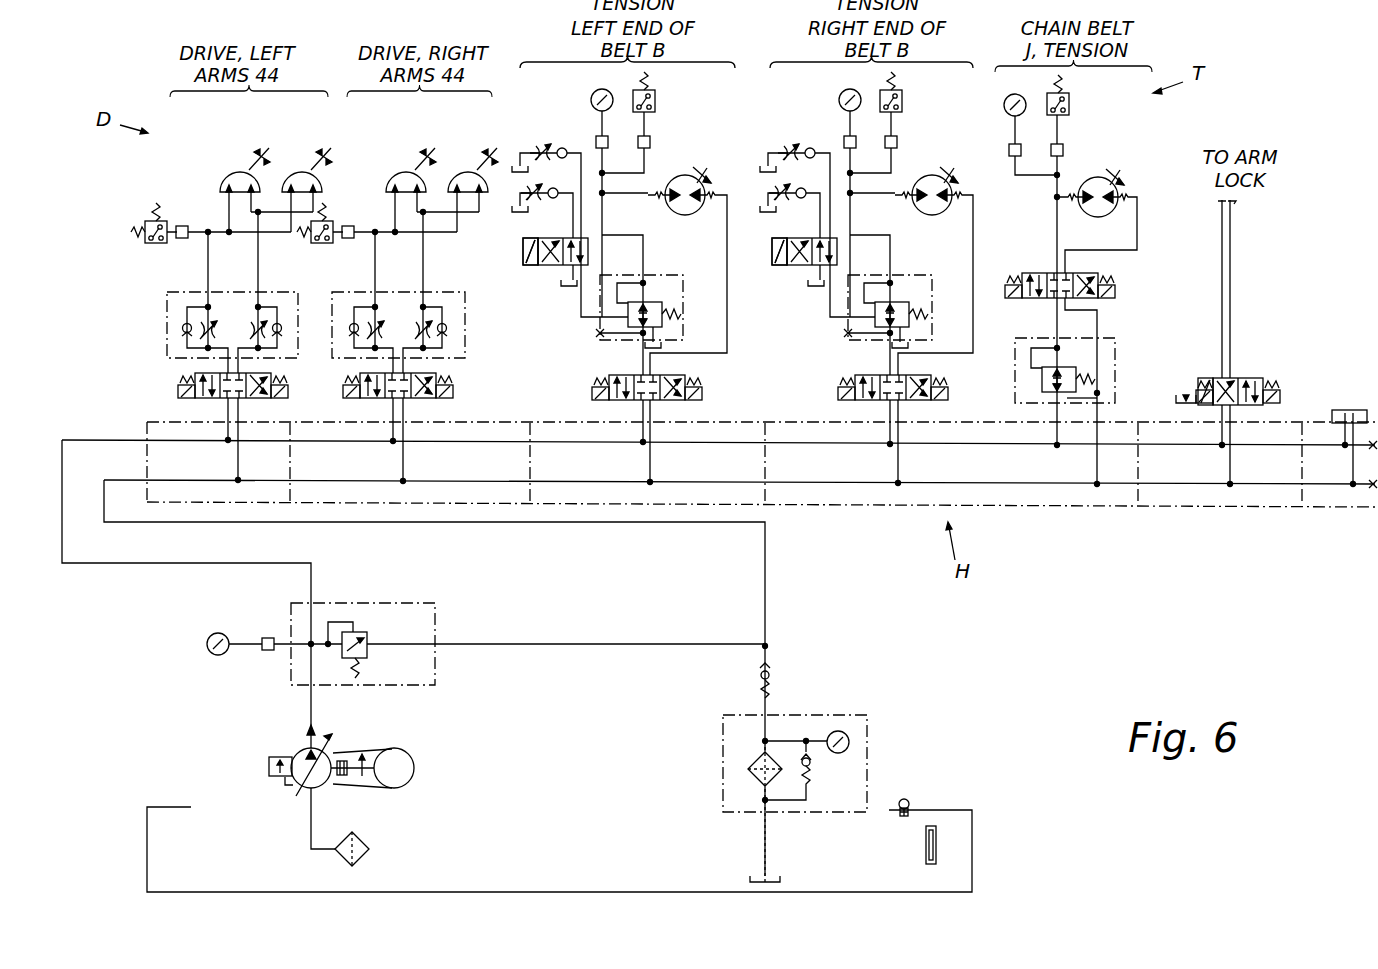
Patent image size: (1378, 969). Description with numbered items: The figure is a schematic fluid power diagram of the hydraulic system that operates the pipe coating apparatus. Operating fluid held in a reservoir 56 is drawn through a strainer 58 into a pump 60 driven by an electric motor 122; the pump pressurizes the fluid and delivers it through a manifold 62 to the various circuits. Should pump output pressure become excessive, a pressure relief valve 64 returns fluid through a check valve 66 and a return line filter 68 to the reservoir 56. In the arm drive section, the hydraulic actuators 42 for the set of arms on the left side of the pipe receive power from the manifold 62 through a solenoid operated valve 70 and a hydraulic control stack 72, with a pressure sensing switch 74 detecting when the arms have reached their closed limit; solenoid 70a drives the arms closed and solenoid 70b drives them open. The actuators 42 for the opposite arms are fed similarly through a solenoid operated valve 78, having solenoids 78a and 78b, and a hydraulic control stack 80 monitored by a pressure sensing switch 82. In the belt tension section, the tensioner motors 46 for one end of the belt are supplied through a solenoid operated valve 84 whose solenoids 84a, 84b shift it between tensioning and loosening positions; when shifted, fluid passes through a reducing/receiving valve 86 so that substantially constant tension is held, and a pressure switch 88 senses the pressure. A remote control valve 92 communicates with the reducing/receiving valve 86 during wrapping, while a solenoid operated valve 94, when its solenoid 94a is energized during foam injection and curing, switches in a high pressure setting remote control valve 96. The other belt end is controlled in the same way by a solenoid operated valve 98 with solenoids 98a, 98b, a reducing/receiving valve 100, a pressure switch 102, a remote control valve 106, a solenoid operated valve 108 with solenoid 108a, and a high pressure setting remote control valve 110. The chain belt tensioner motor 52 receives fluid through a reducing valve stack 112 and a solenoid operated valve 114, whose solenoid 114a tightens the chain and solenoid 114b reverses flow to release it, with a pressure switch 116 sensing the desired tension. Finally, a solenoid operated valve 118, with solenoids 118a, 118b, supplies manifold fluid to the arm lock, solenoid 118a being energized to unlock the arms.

The hydraulic actuator 42 is at (237, 169).
The hydraulic tensioner motor 46 is at (675, 175).
The actuator motor 52 is at (1088, 180).
The reservoir 56 is at (972, 826).
The strainer 58 is at (369, 849).
The motor-driven pump 60 is at (303, 752).
The manifold 62 is at (832, 508).
The pressure relief valve 64 is at (437, 632).
The check valve 66 is at (778, 680).
The return line filter 68 is at (868, 745).
The solenoid operated valve 70 is at (176, 389).
The solenoid 70a is at (178, 378).
The solenoid 70b is at (290, 378).
The hydraulic control stack 72 is at (166, 305).
The pressure sensing switch 74 is at (152, 220).
The solenoid operated valve 78 is at (456, 390).
The solenoid 78a is at (345, 380).
The solenoid 78b is at (455, 378).
The hydraulic control stack 80 is at (466, 330).
The pressure sensing switch 82 is at (335, 222).
The solenoid operated valve 84 is at (706, 396).
The solenoid 84a is at (600, 375).
The solenoid 84b is at (703, 380).
The reducing/receiving valve 86 is at (673, 273).
The pressure switch 88 is at (658, 100).
The remote control valve 92 is at (553, 148).
The solenoid operated valve 94 is at (525, 269).
The solenoid 94a is at (523, 250).
The high pressure setting remote control valve 96 is at (551, 200).
The solenoid operated valve 98 is at (836, 390).
The solenoid 98a is at (848, 375).
The solenoid 98b is at (948, 378).
The reducing/receiving valve 100 is at (914, 273).
The pressure switch 102 is at (905, 105).
The remote control valve 106 is at (800, 150).
The solenoid operated valve 108 is at (779, 271).
The solenoid 108a is at (772, 256).
The high pressure setting remote control valve 110 is at (798, 200).
The reducing valve stack 112 is at (1120, 354).
The solenoid operated valve 114 is at (1118, 289).
The solenoid 114a is at (1004, 270).
The solenoid 114b is at (1118, 272).
The pressure switch 116 is at (1071, 106).
The solenoid operated valve 118 is at (1243, 374).
The solenoid 118a is at (1210, 372).
The solenoid 118b is at (1282, 380).
The motor 122 is at (414, 752).